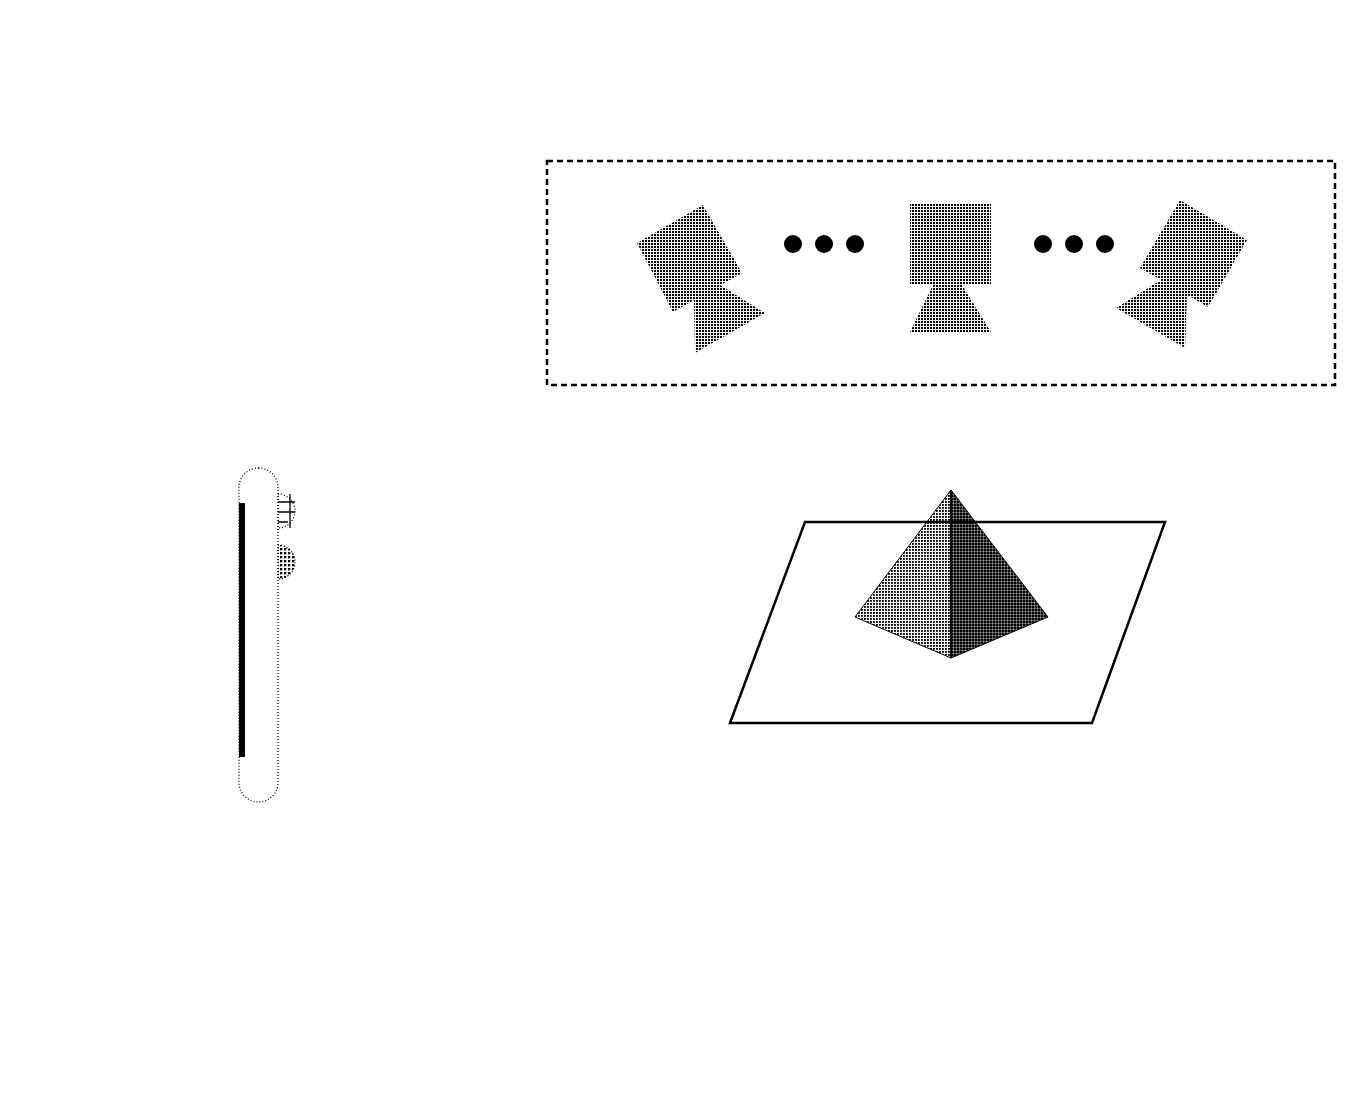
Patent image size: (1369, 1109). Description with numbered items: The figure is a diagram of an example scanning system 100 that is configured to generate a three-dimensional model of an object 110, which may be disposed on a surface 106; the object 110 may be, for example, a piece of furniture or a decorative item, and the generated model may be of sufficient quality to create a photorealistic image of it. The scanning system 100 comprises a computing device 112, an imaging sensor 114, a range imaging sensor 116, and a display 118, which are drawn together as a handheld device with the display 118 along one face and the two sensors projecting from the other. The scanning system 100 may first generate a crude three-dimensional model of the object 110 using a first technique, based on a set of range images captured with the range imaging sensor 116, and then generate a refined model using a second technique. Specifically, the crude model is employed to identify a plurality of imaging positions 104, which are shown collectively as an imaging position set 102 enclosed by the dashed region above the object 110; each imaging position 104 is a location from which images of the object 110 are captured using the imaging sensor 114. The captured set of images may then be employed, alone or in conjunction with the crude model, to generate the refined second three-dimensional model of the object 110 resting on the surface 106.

The scanning system 100 is at (250, 118).
The imaging position set 102 is at (547, 352).
The imaging position 104 is at (1213, 215).
The surface 106 is at (912, 723).
The object 110 is at (905, 547).
The computing device 112 is at (259, 468).
The imaging sensor 114 is at (293, 498).
The range imaging sensor 116 is at (297, 562).
The display 118 is at (240, 580).